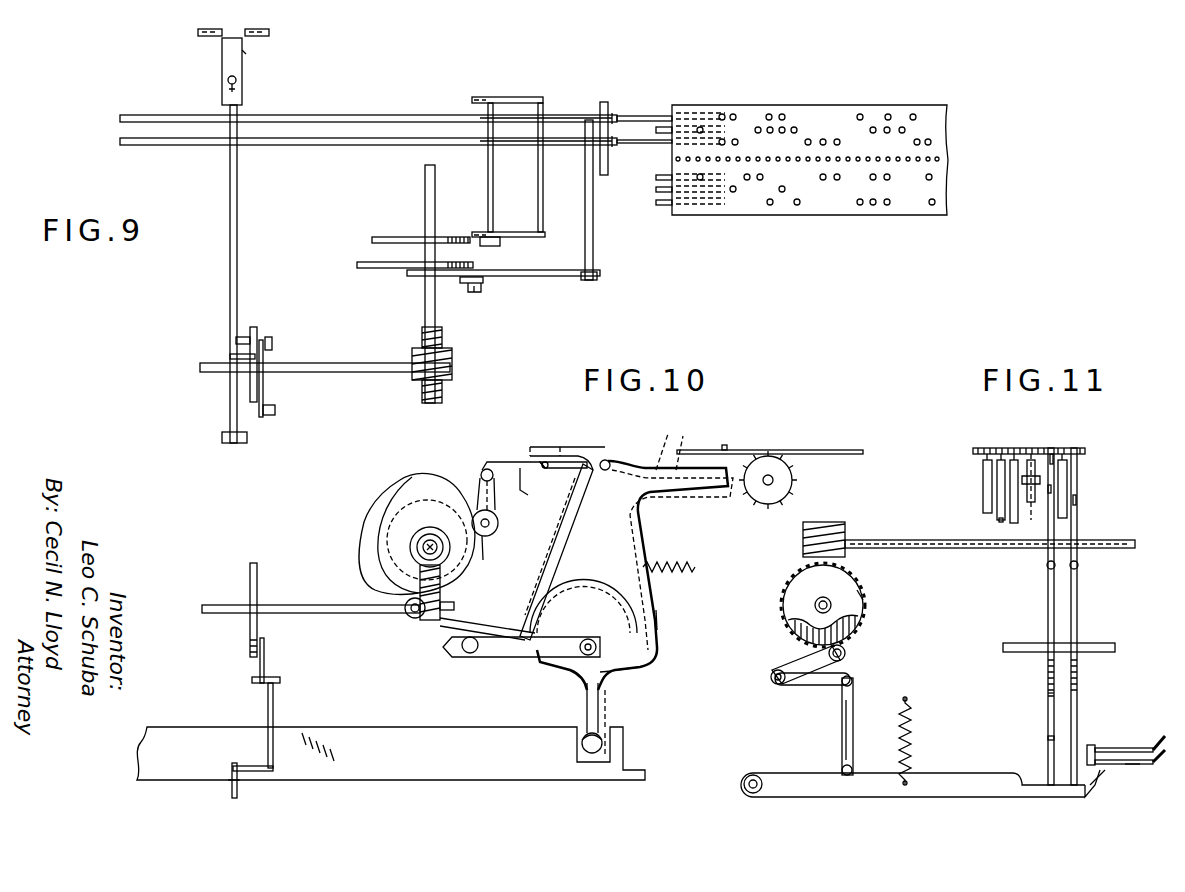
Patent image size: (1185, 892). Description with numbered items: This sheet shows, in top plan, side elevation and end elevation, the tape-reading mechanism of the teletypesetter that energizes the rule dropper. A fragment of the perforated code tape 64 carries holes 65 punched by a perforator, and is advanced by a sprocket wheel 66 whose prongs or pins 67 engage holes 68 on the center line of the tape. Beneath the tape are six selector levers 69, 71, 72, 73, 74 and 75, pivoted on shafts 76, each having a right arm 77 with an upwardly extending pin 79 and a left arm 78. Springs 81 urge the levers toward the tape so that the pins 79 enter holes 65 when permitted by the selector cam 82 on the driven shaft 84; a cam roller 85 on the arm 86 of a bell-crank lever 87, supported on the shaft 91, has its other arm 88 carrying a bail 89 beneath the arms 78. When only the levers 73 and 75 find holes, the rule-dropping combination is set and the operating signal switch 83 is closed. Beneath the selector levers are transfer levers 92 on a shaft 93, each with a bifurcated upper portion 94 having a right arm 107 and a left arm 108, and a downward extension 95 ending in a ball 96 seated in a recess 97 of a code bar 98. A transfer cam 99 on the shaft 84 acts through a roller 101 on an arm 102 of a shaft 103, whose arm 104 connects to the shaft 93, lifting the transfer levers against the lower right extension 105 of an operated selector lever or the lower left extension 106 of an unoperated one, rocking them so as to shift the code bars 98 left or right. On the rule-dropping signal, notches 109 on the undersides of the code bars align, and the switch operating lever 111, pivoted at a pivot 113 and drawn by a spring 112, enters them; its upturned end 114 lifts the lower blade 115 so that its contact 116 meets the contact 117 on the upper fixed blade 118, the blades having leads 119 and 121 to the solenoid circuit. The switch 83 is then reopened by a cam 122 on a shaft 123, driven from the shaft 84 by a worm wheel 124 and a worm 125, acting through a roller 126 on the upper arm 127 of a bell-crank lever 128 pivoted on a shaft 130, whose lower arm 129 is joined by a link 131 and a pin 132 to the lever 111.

In FIG. 9, the code tape 64 is at (806, 106).
In FIG. 10, the code tape 64 is at (845, 450).
In FIG. 11, the code tape 64 is at (1017, 449).
In FIG. 9, the holes 65 is at (770, 127).
In FIG. 10, the sprocket wheel 66 is at (792, 478).
In FIG. 11, the sprocket wheel 66 is at (1041, 512).
In FIG. 10, the prongs or pins 67 is at (792, 492).
In FIG. 11, the prongs or pins 67 is at (1034, 452).
In FIG. 9, the holes 68 is at (675, 159).
In FIG. 9, the selector lever 69 is at (657, 204).
In FIG. 11, the selector lever 69 is at (983, 492).
In FIG. 9, the selector lever 71 is at (657, 190).
In FIG. 11, the selector lever 71 is at (997, 477).
In FIG. 9, the selector lever 72 is at (657, 178).
In FIG. 11, the selector lever 72 is at (1000, 518).
In FIG. 9, the selector lever 73 is at (665, 143).
In FIG. 10, the selector lever 73 is at (552, 547).
In FIG. 11, the selector lever 73 is at (1053, 490).
In FIG. 9, the selector lever 74 is at (656, 130).
In FIG. 11, the selector lever 74 is at (1062, 472).
In FIG. 9, the selector lever 75 is at (636, 117).
In FIG. 11, the selector lever 75 is at (1077, 502).
In FIG. 9, the shafts 76 is at (604, 102).
In FIG. 10, the shafts 76 is at (608, 462).
In FIG. 10, the arms 77 is at (660, 468).
In FIG. 9, the arms 78 is at (555, 142).
In FIG. 10, the arms 78 is at (562, 447).
In FIG. 9, the pins 79 is at (722, 142).
In FIG. 10, the pins 79 is at (725, 447).
In FIG. 11, the pins 79 is at (1068, 448).
In FIG. 10, the springs 81 is at (670, 572).
In FIG. 11, the springs 81 is at (1046, 565).
In FIG. 9, the selector cam 82 is at (397, 240).
In FIG. 10, the selector cam 82 is at (445, 482).
In FIG. 9, the operating signal switch 83 is at (250, 55).
In FIG. 11, the operating signal switch 83 is at (1135, 770).
In FIG. 9, the shaft 84 is at (433, 215).
In FIG. 10, the shaft 84 is at (442, 552).
In FIG. 11, the shaft 84 is at (892, 536).
In FIG. 9, the cam roller 85 is at (494, 245).
In FIG. 10, the cam roller 85 is at (487, 540).
In FIG. 10, the arm 86 is at (497, 522).
In FIG. 10, the bell-crank lever 87 is at (520, 490).
In FIG. 9, the arm 88 is at (515, 232).
In FIG. 10, the arm 88 is at (508, 462).
In FIG. 9, the bail 89 is at (543, 184).
In FIG. 10, the bail 89 is at (545, 475).
In FIG. 9, the shaft 91 is at (493, 184).
In FIG. 10, the shaft 91 is at (487, 468).
In FIG. 10, the transfer levers 92 is at (639, 677).
In FIG. 11, the transfer levers 92 is at (1033, 699).
In FIG. 9, the shaft 93 is at (593, 248).
In FIG. 10, the shaft 93 is at (592, 605).
In FIG. 11, the shaft 93 is at (1100, 651).
In FIG. 10, the bifurcated upper portion 94 is at (642, 663).
In FIG. 10, the downward extension 95 is at (586, 705).
In FIG. 10, the rounded portion or ball 96 is at (580, 752).
In FIG. 10, the recess 97 is at (585, 737).
In FIG. 9, the code bar 98 is at (332, 140).
In FIG. 10, the code bar 98 is at (355, 738).
In FIG. 11, the code bar 98 is at (1048, 738).
In FIG. 9, the transfer cam 99 is at (360, 270).
In FIG. 10, the transfer cam 99 is at (372, 565).
In FIG. 9, the roller 101 is at (412, 275).
In FIG. 10, the roller 101 is at (410, 615).
In FIG. 9, the arm 102 is at (452, 284).
In FIG. 10, the arm 102 is at (452, 620).
In FIG. 9, the shaft 103 is at (482, 290).
In FIG. 10, the shaft 103 is at (412, 630).
In FIG. 9, the arm 104 is at (540, 277).
In FIG. 10, the arm 104 is at (480, 660).
In FIG. 10, the lower right extension 105 is at (657, 620).
In FIG. 11, the lower right extension 105 is at (1047, 617).
In FIG. 10, the lower left extension 106 is at (575, 610).
In FIG. 10, the right arm 107 is at (600, 645).
In FIG. 11, the right arm 107 is at (1047, 670).
In FIG. 10, the left arm 108 is at (470, 653).
In FIG. 10, the notches 109 is at (232, 784).
In FIG. 9, the switch operating lever 111 is at (230, 167).
In FIG. 10, the switch operating lever 111 is at (240, 790).
In FIG. 11, the switch operating lever 111 is at (960, 765).
In FIG. 11, the spring 112 is at (907, 700).
In FIG. 9, the pivot 113 is at (222, 440).
In FIG. 11, the pivot 113 is at (748, 783).
In FIG. 11, the upturned end 114 is at (1092, 788).
In FIG. 11, the lower blade 115 is at (1100, 790).
In FIG. 11, the contact 116 is at (1097, 748).
In FIG. 11, the contact 117 is at (1100, 742).
In FIG. 9, the upper fixed blade 118 is at (222, 62).
In FIG. 11, the upper fixed blade 118 is at (1112, 760).
In FIG. 9, the lead 119 is at (262, 33).
In FIG. 11, the lead 119 is at (1163, 770).
In FIG. 9, the lead 121 is at (205, 33).
In FIG. 11, the lead 121 is at (1158, 740).
In FIG. 9, the cam 122 is at (253, 327).
In FIG. 10, the cam 122 is at (255, 568).
In FIG. 11, the cam 122 is at (796, 574).
In FIG. 9, the shaft 123 is at (355, 372).
In FIG. 10, the shaft 123 is at (342, 607).
In FIG. 11, the shaft 123 is at (835, 607).
In FIG. 9, the worm wheel 124 is at (420, 405).
In FIG. 10, the worm wheel 124 is at (422, 630).
In FIG. 11, the worm wheel 124 is at (863, 595).
In FIG. 9, the worm 125 is at (452, 362).
In FIG. 10, the worm 125 is at (415, 495).
In FIG. 11, the worm 125 is at (840, 526).
In FIG. 9, the roller 126 is at (230, 357).
In FIG. 10, the roller 126 is at (250, 650).
In FIG. 11, the roller 126 is at (844, 652).
In FIG. 11, the upper arm 127 is at (800, 660).
In FIG. 9, the bell-crank lever 128 is at (264, 390).
In FIG. 10, the bell-crank lever 128 is at (273, 663).
In FIG. 11, the bell-crank lever 128 is at (831, 673).
In FIG. 11, the lower arm 129 is at (832, 690).
In FIG. 9, the shaft 130 is at (270, 415).
In FIG. 10, the shaft 130 is at (253, 681).
In FIG. 11, the shaft 130 is at (798, 684).
In FIG. 9, the link 131 is at (270, 338).
In FIG. 10, the link 131 is at (268, 694).
In FIG. 11, the link 131 is at (842, 728).
In FIG. 9, the pin 132 is at (242, 337).
In FIG. 10, the pin 132 is at (245, 765).
In FIG. 11, the pin 132 is at (840, 770).